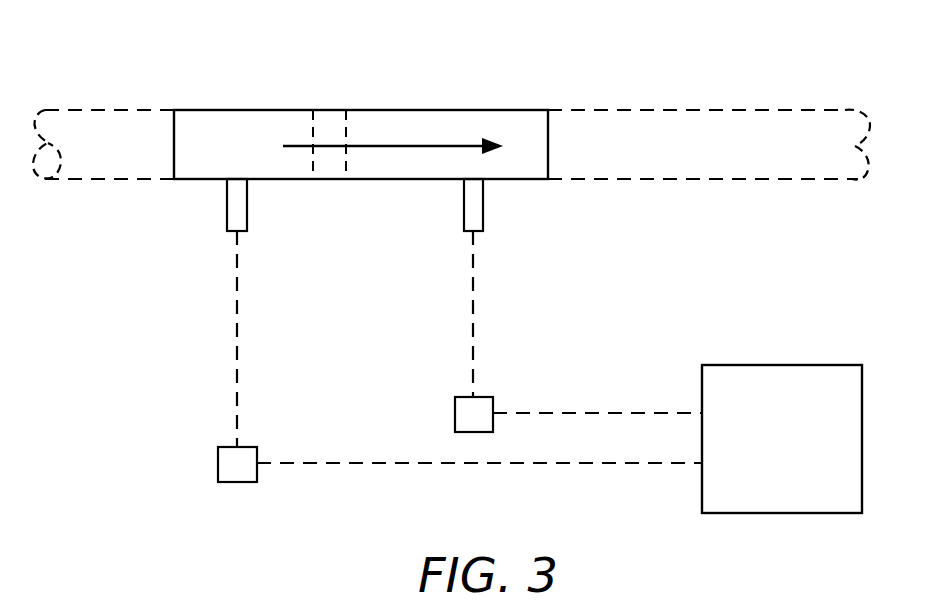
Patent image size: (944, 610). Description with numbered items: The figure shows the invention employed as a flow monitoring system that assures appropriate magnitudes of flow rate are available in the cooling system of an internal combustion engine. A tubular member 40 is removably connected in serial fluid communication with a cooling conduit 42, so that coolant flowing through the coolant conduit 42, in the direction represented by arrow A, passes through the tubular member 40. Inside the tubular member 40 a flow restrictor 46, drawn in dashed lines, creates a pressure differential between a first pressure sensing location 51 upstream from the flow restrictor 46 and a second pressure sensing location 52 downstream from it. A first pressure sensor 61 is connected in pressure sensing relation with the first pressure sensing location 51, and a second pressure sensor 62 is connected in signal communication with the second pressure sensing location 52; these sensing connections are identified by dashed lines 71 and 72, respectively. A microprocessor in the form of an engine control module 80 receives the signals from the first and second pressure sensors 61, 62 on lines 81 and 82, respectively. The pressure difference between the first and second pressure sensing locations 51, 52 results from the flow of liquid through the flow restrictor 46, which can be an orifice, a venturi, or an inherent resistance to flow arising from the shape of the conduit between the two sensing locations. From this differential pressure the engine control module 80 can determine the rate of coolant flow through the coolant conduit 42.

The tubular member 40 is at (226, 120).
The cooling conduit 42 is at (100, 118).
The flow restrictor 46 is at (346, 128).
The arrow A is at (415, 143).
The first pressure sensing location 51 is at (234, 179).
The second pressure sensing location 52 is at (471, 179).
The first pressure sensor 61 is at (237, 470).
The second pressure sensor 62 is at (484, 402).
The dashed line 71 is at (240, 318).
The dashed line 72 is at (475, 290).
The engine control module 80 is at (780, 375).
The line 81 is at (563, 463).
The line 82 is at (572, 413).